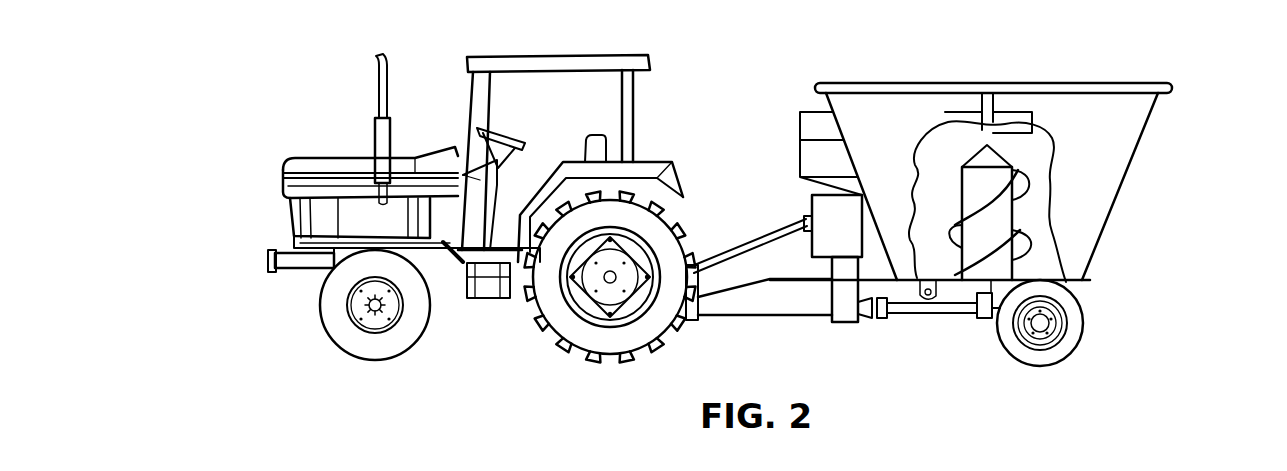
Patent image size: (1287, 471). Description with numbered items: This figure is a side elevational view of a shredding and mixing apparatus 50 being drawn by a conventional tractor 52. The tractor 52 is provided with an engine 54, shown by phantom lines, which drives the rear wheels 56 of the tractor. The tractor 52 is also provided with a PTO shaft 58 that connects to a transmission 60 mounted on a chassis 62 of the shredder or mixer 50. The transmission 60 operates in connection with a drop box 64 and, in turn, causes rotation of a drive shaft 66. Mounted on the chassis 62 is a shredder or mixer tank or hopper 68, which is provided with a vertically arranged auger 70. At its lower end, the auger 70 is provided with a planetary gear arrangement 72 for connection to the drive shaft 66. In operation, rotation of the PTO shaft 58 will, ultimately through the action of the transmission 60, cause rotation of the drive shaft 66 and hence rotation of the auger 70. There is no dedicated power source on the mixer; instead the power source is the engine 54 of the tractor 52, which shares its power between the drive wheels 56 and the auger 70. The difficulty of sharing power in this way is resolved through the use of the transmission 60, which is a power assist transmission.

The shredding and mixing apparatus 50 is at (1140, 178).
The tractor 52 is at (568, 50).
The engine 54 is at (355, 228).
The rear wheels 56 is at (563, 350).
The PTO shaft 58 is at (745, 247).
The transmission 60 is at (812, 200).
The chassis 62 is at (1063, 284).
The drop box 64 is at (845, 323).
The drive shaft 66 is at (946, 317).
The tank or hopper 68 is at (1153, 126).
The auger 70 is at (1020, 203).
The planetary gear arrangement 72 is at (1080, 352).